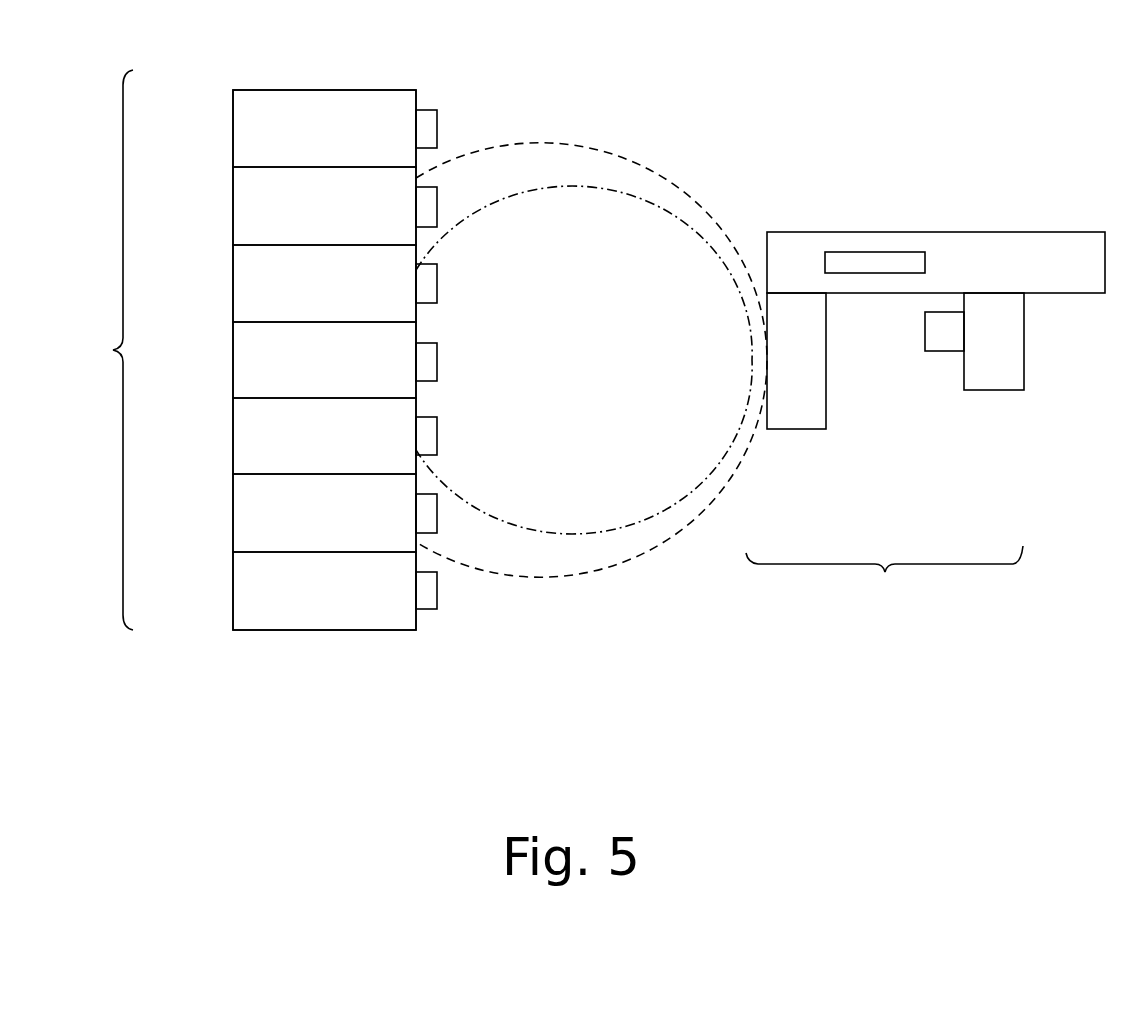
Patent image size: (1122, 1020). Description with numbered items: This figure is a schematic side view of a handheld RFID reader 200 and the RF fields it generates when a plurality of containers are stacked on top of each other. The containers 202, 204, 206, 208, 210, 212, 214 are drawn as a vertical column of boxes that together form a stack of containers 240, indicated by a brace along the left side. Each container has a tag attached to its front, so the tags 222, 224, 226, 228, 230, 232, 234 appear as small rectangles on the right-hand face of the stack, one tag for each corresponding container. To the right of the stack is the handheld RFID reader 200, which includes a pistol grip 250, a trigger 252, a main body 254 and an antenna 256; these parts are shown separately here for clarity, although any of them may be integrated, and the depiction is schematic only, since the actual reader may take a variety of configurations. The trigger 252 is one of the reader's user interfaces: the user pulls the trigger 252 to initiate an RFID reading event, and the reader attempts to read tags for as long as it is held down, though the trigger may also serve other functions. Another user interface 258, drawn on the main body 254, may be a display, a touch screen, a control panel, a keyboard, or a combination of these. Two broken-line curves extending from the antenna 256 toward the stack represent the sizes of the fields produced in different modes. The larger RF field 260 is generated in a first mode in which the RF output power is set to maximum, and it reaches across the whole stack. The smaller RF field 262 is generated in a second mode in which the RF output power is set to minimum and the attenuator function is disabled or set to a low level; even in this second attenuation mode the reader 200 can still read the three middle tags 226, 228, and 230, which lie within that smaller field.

The handheld RFID reader 200 is at (884, 585).
The container 202 is at (292, 104).
The container 204 is at (292, 182).
The container 206 is at (292, 262).
The container 208 is at (292, 340).
The container 210 is at (292, 417).
The container 212 is at (292, 495).
The container 214 is at (292, 567).
The tag 222 is at (372, 125).
The tag 224 is at (372, 203).
The tag 226 is at (372, 280).
The tag 228 is at (372, 358).
The tag 230 is at (372, 434).
The tag 232 is at (372, 512).
The tag 234 is at (372, 589).
The stack of containers 240 is at (233, 350).
The pistol grip 250 is at (981, 390).
The trigger 252 is at (911, 379).
The main body 254 is at (936, 206).
The antenna 256 is at (785, 411).
The user interface 258 is at (882, 218).
The RF field 260 is at (591, 310).
The RF field 262 is at (584, 328).